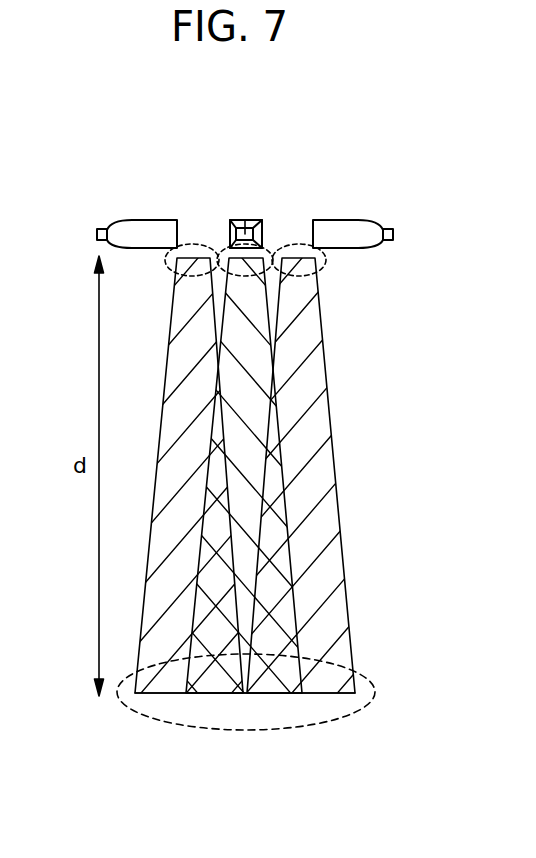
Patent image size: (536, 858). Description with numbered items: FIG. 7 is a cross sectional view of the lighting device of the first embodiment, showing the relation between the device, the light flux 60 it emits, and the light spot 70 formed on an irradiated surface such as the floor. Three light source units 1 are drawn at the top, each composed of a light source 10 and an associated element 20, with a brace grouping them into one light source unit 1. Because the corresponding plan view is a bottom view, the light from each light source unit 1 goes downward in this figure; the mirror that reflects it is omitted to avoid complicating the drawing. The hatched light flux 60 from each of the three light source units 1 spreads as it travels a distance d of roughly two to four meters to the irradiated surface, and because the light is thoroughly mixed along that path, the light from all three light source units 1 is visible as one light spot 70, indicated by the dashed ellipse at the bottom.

The light source unit 1 is at (82, 168).
The light source 10 is at (147, 220).
The optical member 20 is at (101, 229).
The light flux 60 is at (190, 337).
The light spot 70 is at (328, 705).